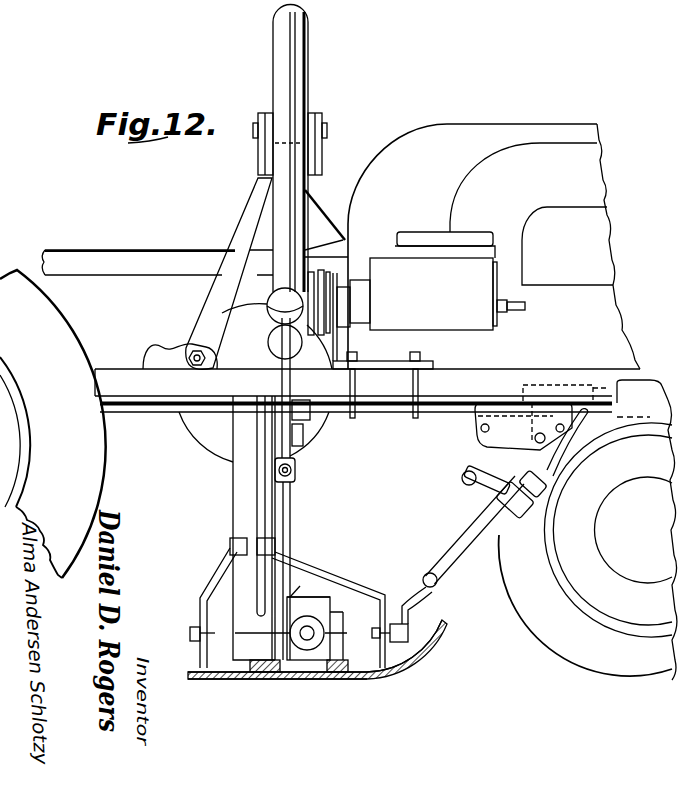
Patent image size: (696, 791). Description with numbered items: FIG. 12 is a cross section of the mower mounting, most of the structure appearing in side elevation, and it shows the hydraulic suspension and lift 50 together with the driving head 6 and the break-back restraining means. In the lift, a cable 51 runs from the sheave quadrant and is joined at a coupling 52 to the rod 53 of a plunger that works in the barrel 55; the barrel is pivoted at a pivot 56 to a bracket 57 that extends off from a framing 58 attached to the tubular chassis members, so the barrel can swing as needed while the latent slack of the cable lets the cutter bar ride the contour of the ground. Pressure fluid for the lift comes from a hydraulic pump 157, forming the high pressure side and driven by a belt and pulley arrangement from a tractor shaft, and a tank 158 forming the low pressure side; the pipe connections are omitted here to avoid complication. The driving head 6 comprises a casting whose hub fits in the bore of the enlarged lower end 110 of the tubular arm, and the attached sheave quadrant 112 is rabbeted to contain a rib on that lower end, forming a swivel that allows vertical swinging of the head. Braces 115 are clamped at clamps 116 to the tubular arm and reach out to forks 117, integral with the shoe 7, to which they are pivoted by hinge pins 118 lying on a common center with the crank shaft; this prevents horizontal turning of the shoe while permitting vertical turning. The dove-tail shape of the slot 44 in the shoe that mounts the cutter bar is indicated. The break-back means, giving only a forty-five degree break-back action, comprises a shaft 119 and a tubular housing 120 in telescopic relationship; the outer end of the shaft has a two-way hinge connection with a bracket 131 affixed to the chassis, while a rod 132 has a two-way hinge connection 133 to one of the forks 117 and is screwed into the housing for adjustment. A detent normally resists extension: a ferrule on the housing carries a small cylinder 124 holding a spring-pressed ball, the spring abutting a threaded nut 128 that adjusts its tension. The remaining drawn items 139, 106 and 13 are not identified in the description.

The hydraulic suspension and lift 50 is at (312, 41).
The barrel 55 is at (307, 65).
The pivot 56 is at (324, 125).
The bracket 57 is at (316, 152).
The framing 58 is at (257, 230).
The tank 158 is at (443, 238).
The hydraulic pump 157 is at (456, 315).
The bracket 131 is at (510, 420).
The lug 139 is at (580, 385).
The rod 53 is at (285, 352).
The coupling 52 is at (277, 465).
The cable 51 is at (289, 486).
The clamp 116 is at (233, 540).
The braces 115 is at (210, 584).
The sheave quadrant 112 is at (302, 565).
The driving head 6 is at (301, 582).
The bearing housing 106 is at (308, 632).
The link 13 is at (228, 632).
The rod 132 is at (434, 593).
The shoe 7 is at (447, 614).
The two-way hinge connection 133 is at (522, 478).
The threaded nut 128 is at (464, 474).
The small cylinder 124 is at (472, 488).
The tubular housing 120 is at (466, 545).
The shaft 119 is at (542, 462).
The hinge pins 118 is at (190, 633).
The forks 117 is at (247, 641).
The enlarged lower end 110 is at (198, 670).
The dove-tail slot 44 is at (300, 680).